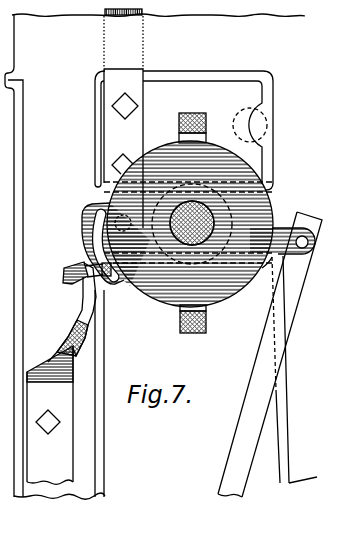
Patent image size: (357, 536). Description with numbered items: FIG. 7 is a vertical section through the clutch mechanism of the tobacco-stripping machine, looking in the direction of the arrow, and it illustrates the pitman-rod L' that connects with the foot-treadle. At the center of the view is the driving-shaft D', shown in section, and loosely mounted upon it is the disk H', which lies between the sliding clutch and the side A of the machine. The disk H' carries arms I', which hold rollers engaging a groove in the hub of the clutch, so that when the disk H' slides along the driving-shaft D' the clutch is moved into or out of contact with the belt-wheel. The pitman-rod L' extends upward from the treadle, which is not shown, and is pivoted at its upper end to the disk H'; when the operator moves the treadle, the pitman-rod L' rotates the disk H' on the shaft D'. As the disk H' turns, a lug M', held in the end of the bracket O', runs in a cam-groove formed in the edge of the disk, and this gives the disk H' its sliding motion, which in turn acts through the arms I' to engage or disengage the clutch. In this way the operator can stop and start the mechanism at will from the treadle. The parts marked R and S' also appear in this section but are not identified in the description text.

The side of the machine A is at (161, 256).
The rod R is at (104, 17).
The slide bar S' is at (123, 148).
The arms I' is at (198, 221).
The disk H' is at (198, 224).
The driving-shaft D' is at (202, 223).
The lug M' is at (79, 302).
The bracket O' is at (50, 415).
The pitman-rod L' is at (270, 354).